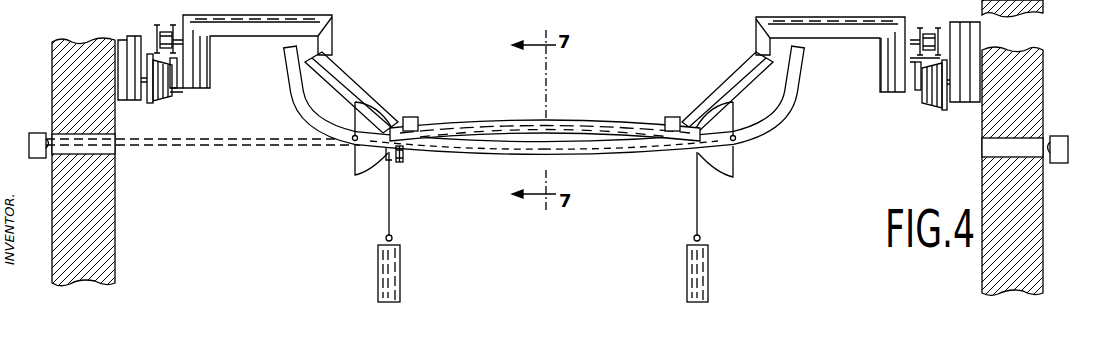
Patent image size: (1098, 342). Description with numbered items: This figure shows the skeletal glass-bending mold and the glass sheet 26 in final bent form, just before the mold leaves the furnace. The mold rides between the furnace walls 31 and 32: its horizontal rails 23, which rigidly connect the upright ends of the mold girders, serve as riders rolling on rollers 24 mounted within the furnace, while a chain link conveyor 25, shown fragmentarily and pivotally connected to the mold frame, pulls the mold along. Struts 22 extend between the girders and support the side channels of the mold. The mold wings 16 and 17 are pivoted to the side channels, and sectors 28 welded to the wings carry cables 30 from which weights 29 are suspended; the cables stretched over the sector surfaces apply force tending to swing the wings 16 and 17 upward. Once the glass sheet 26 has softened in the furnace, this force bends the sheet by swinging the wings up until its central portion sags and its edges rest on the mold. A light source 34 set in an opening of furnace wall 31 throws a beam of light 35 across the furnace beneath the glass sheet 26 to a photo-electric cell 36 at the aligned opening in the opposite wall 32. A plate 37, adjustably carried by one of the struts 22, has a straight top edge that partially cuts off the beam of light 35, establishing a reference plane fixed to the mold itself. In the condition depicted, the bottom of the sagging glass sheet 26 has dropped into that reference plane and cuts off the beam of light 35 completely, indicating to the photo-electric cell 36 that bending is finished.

The wing 16 is at (302, 108).
The wing 17 is at (788, 100).
The strut 22 is at (392, 166).
The horizontal rail 23 is at (180, 92).
The roller 24 is at (148, 104).
The chain link conveyor 25 is at (171, 23).
The glass sheet 26 is at (462, 128).
The sector 28 is at (353, 171).
The weight 29 is at (400, 283).
The cable 30 is at (392, 202).
The furnace wall 31 is at (116, 246).
The furnace wall 32 is at (982, 182).
The light source 34 is at (29, 141).
The beam of light 35 is at (198, 148).
The photo-electric cell 36 is at (1067, 163).
The plate 37 is at (402, 165).